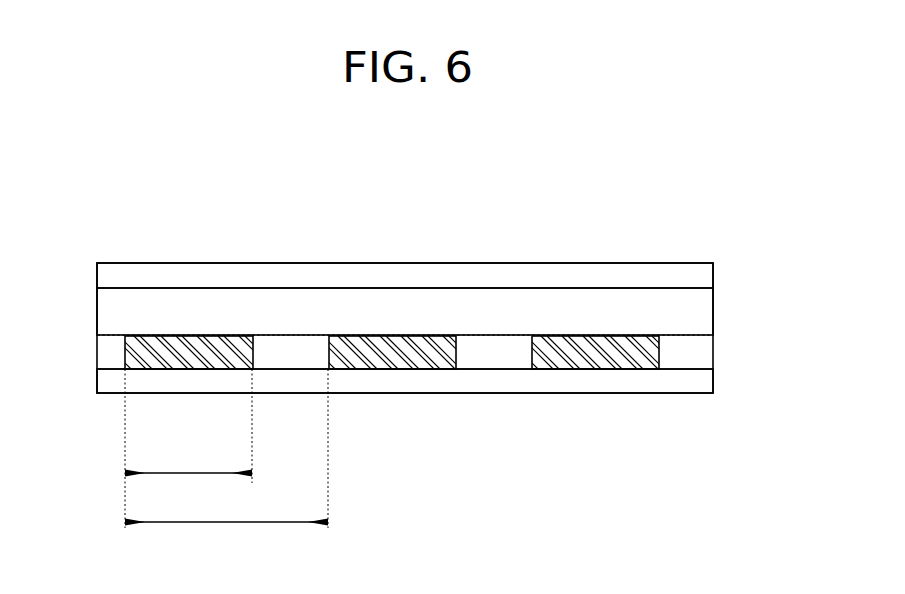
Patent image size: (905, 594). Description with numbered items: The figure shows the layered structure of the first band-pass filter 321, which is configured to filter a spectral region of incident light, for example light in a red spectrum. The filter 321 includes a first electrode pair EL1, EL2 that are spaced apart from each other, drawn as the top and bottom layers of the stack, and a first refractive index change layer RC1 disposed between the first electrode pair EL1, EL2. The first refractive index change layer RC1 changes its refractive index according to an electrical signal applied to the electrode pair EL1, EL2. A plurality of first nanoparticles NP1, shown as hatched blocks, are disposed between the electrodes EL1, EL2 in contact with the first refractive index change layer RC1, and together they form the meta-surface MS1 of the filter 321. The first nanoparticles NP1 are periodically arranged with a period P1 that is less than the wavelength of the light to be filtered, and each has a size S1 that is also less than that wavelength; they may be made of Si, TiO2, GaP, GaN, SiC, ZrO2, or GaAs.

The first band-pass filter 321 is at (735, 246).
The first electrode EL1 is at (111, 277).
The first refractive index change layer RC1 is at (111, 315).
The second electrode EL2 is at (111, 380).
The meta-surface MS1 is at (436, 396).
The first nanoparticles NP1 is at (184, 353).
The size of the first nanoparticles S1 is at (188, 448).
The period of the first nanoparticles P1 is at (226, 461).